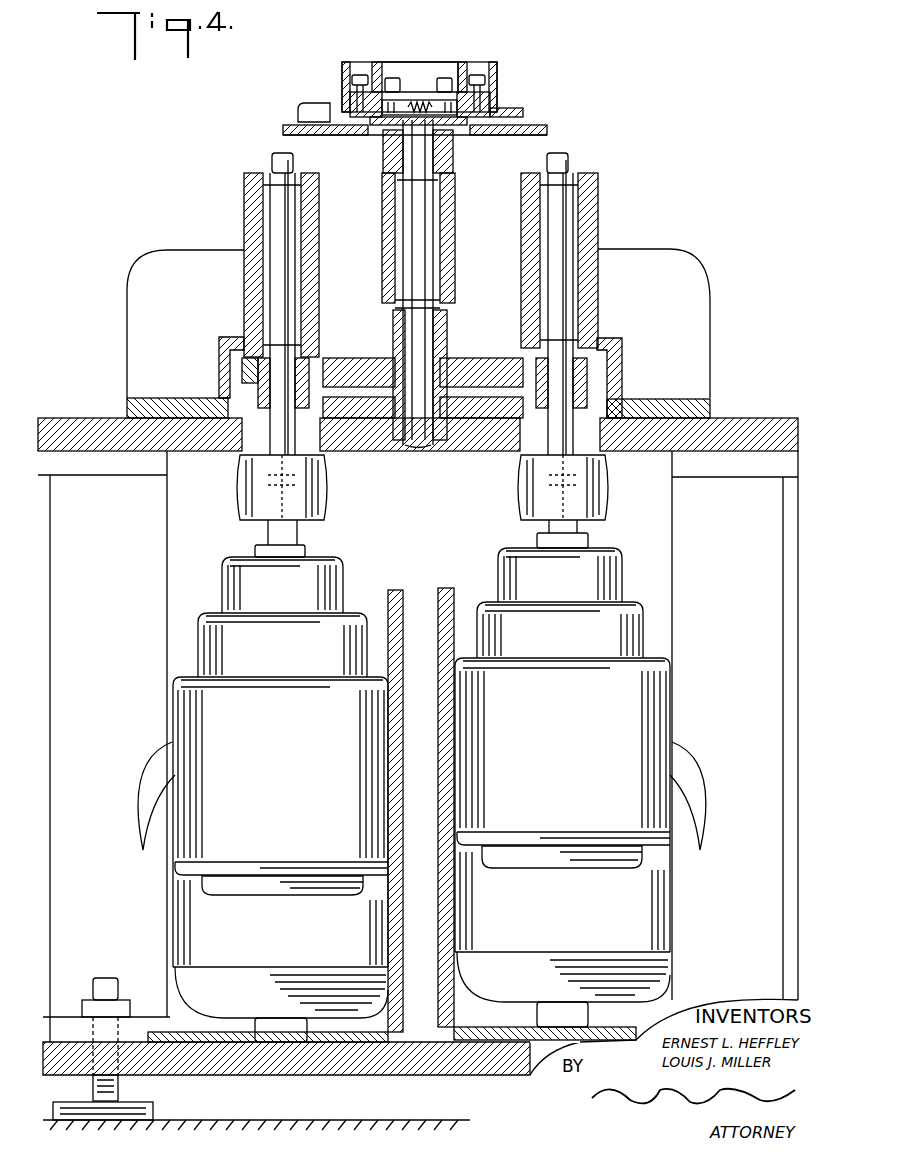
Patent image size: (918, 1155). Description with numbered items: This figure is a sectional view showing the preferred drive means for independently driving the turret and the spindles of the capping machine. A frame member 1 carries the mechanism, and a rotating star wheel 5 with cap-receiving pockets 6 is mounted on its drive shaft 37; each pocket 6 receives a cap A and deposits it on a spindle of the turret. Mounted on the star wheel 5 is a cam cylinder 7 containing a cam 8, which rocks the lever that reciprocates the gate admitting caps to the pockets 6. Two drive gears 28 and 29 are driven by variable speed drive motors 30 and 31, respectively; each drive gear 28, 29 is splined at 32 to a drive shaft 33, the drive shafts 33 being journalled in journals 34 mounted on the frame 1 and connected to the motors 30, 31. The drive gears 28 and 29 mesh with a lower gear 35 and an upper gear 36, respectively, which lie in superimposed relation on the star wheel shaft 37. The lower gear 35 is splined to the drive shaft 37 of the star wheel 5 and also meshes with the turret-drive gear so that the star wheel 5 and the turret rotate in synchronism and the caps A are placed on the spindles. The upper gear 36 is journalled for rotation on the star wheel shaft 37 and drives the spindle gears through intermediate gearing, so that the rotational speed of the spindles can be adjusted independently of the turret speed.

The frame member 1 is at (750, 428).
The rotating star wheel 5 is at (503, 104).
The cap-receiving pockets 6 is at (524, 113).
The cam cylinder 7 is at (497, 70).
The cam 8 is at (487, 62).
The drive gear 28 is at (600, 392).
The drive gear 29 is at (248, 370).
The variable speed drive motor 30 is at (662, 680).
The variable speed drive motor 31 is at (182, 696).
The spline 32 is at (302, 368).
The drive shafts 33 is at (290, 273).
The journals 34 is at (244, 210).
The lower gear 35 is at (484, 408).
The upper gear 36 is at (482, 362).
The drive shaft of the star wheel 37 is at (428, 326).
The cap A is at (304, 106).